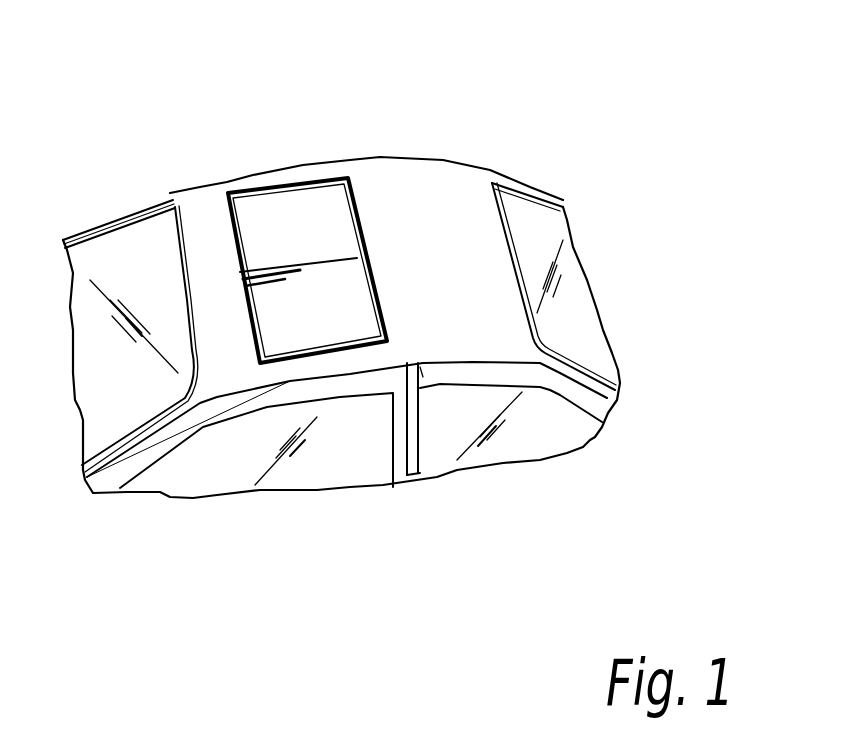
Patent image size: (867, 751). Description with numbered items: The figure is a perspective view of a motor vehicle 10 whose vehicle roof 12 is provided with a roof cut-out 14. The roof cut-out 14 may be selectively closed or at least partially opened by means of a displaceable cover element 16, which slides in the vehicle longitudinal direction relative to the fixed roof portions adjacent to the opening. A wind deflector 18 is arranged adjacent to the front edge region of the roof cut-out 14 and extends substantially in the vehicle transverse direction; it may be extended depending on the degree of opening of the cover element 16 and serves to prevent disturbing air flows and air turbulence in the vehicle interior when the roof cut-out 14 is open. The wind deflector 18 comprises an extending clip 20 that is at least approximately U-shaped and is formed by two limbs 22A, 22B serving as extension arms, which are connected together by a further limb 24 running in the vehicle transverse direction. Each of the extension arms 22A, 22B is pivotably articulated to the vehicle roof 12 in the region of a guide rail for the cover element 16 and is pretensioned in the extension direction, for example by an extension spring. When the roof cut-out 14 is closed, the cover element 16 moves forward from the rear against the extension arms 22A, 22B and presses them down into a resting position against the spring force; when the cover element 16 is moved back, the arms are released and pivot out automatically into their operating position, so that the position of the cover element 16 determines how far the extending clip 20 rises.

The motor vehicle 10 is at (678, 76).
The vehicle roof 12 is at (419, 166).
The roof cut-out 14 is at (367, 353).
The cover element 16 is at (307, 270).
The wind deflector 18 is at (232, 235).
The extending clip 20 is at (257, 333).
The limb 22A is at (305, 355).
The limb 22B is at (250, 183).
The limb 24 is at (262, 310).